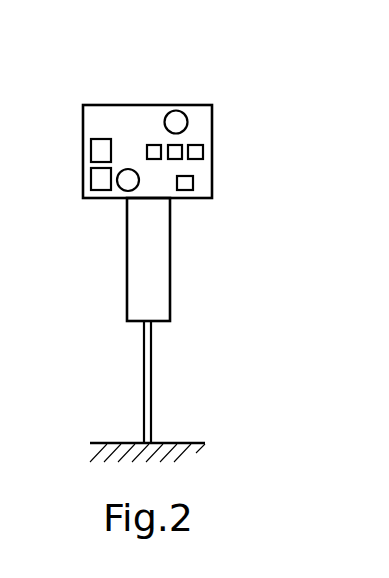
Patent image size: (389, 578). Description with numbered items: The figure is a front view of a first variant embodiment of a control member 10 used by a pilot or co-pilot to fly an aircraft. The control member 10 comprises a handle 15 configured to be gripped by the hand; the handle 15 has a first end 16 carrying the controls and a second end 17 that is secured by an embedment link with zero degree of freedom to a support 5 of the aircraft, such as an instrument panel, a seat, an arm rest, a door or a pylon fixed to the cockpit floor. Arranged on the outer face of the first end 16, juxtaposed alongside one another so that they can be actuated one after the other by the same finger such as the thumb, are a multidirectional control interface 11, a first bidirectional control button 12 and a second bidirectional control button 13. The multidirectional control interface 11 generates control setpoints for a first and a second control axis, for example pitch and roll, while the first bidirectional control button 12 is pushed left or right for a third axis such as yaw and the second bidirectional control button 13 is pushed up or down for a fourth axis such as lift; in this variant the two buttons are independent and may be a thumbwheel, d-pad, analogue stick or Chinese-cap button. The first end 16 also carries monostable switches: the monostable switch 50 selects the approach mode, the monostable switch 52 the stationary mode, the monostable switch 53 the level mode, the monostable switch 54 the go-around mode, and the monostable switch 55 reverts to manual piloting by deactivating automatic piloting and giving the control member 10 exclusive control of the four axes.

The support 5 is at (115, 442).
The control member 10 is at (228, 318).
The multidirectional control interface 11 is at (128, 191).
The first bidirectional control button 12 is at (100, 198).
The second bidirectional control button 13 is at (100, 138).
The handle 15 is at (170, 250).
The first end 16 is at (246, 162).
The second end 17 is at (168, 428).
The monostable switch 50 is at (176, 111).
The monostable switch 52 is at (150, 145).
The monostable switch 53 is at (180, 145).
The monostable switch 54 is at (204, 152).
The monostable switch 55 is at (193, 183).